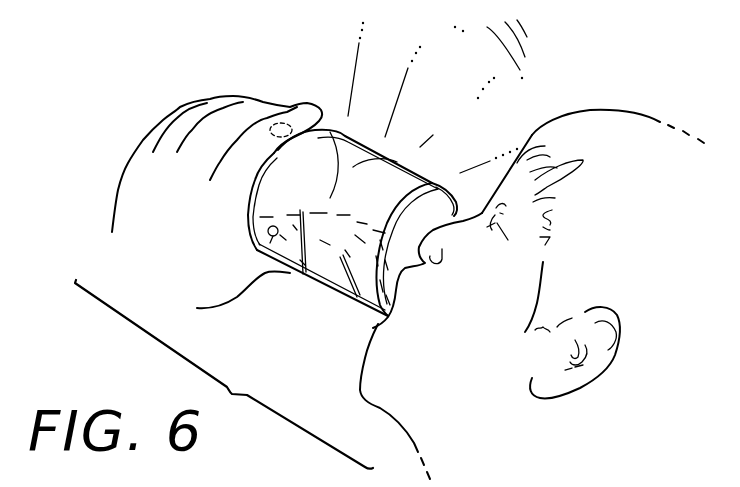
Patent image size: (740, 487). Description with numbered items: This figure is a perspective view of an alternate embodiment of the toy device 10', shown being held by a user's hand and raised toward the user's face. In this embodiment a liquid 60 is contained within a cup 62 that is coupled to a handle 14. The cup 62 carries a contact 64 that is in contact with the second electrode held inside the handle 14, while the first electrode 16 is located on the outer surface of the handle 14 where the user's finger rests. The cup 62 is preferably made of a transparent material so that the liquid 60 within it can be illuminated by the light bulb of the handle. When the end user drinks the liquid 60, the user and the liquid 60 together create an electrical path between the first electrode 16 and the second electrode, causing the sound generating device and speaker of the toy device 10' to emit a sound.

The toy device 10' is at (379, 208).
The handle 14 is at (328, 138).
The first electrode 16 is at (277, 125).
The liquid 60 is at (340, 280).
The cup 62 is at (393, 160).
The contact 64 is at (273, 247).